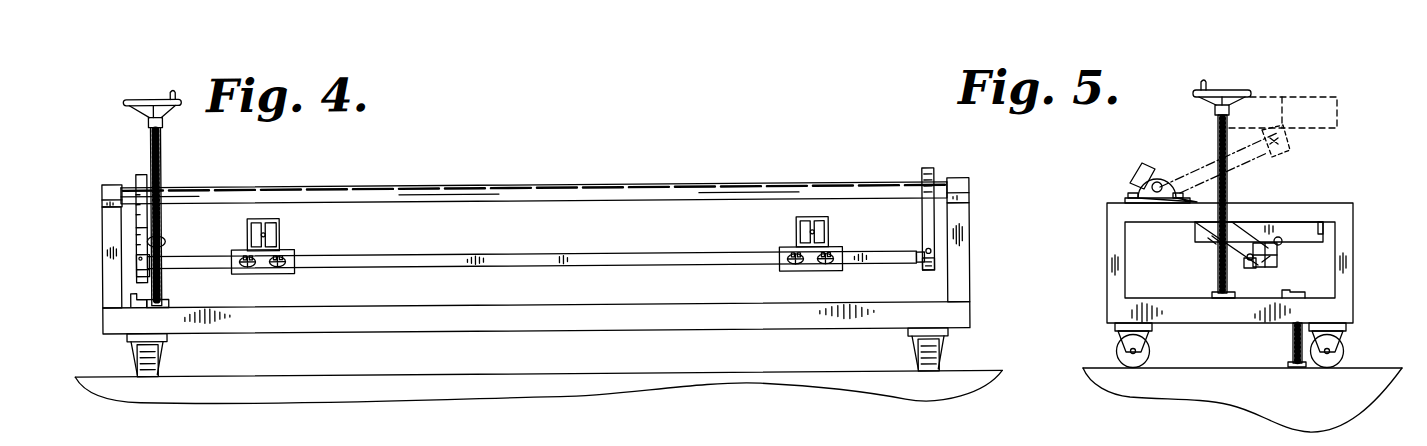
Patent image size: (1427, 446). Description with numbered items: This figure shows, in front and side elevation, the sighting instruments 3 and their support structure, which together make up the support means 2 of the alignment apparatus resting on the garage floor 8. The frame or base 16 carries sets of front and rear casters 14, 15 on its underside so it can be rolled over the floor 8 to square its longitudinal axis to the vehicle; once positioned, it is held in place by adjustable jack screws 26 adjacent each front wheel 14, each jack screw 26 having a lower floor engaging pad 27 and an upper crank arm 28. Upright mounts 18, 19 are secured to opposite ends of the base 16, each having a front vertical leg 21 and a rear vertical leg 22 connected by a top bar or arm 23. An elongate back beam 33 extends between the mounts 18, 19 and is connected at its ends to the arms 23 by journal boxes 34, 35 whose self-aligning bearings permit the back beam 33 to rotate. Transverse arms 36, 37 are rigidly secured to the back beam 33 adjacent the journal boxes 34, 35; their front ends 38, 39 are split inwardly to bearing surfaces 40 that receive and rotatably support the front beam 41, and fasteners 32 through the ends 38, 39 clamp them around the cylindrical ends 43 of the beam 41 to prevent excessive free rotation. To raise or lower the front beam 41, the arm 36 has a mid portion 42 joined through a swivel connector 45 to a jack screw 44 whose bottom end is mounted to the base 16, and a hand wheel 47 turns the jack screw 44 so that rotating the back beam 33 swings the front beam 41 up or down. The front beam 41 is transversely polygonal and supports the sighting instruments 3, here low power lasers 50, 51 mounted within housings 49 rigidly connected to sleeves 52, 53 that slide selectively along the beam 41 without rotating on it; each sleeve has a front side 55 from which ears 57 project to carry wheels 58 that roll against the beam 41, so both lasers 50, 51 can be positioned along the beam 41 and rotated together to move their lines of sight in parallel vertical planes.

In FIG. 4, the support means 2 is at (497, 188).
In FIG. 5, the support means 2 is at (1350, 287).
In FIG. 4, the sighting instruments 3 is at (281, 223).
In FIG. 5, the sighting instruments 3 is at (1323, 103).
In FIG. 4, the garage floor 8 is at (568, 376).
In FIG. 5, the garage floor 8 is at (1197, 367).
In FIG. 4, the front casters 14 is at (165, 368).
In FIG. 5, the front casters 14 is at (1338, 356).
In FIG. 5, the rear casters 15 is at (1122, 356).
In FIG. 4, the frame or base 16 is at (512, 306).
In FIG. 5, the frame or base 16 is at (1340, 310).
In FIG. 4, the upright mount 18 is at (108, 245).
In FIG. 4, the upright mount 19 is at (967, 248).
In FIG. 4, the front vertical leg 21 is at (110, 260).
In FIG. 5, the front vertical leg 21 is at (1347, 252).
In FIG. 5, the rear vertical leg 22 is at (1115, 243).
In FIG. 5, the top bar or arm 23 is at (1330, 207).
In FIG. 4, the jack screw 26 is at (131, 350).
In FIG. 5, the jack screw 26 is at (1293, 338).
In FIG. 5, the floor engaging pad 27 is at (1284, 362).
In FIG. 4, the crank arm 28 is at (128, 297).
In FIG. 5, the crank arm 28 is at (1296, 288).
In FIG. 4, the fasteners 32 is at (929, 252).
In FIG. 5, the fasteners 32 is at (1281, 243).
In FIG. 4, the back beam 33 is at (590, 188).
In FIG. 5, the back beam 33 is at (1158, 182).
In FIG. 4, the journal box 34 is at (113, 185).
In FIG. 5, the journal box 34 is at (1132, 197).
In FIG. 4, the journal box 35 is at (965, 179).
In FIG. 4, the transverse arm 36 is at (142, 228).
In FIG. 5, the transverse arm 36 is at (1217, 229).
In FIG. 4, the transverse arm 37 is at (927, 210).
In FIG. 4, the front end 38 is at (137, 275).
In FIG. 5, the front end 38 is at (1244, 263).
In FIG. 4, the front end 39 is at (931, 268).
In FIG. 5, the bearing surfaces 40 is at (1262, 243).
In FIG. 4, the front beam 41 is at (563, 256).
In FIG. 5, the front beam 41 is at (1246, 258).
In FIG. 4, the mid portion 42 is at (118, 248).
In FIG. 4, the ends of the beam 43 is at (918, 263).
In FIG. 4, the jack screw 44 is at (163, 168).
In FIG. 5, the jack screw 44 is at (1228, 197).
In FIG. 4, the swivel connector 45 is at (167, 243).
In FIG. 4, the hand wheel 47 is at (136, 116).
In FIG. 5, the hand wheel 47 is at (1232, 90).
In FIG. 4, the housings 49 is at (258, 220).
In FIG. 5, the housings 49 is at (1283, 94).
In FIG. 4, the laser 50 is at (282, 238).
In FIG. 5, the laser 50 is at (1327, 223).
In FIG. 4, the laser 51 is at (800, 228).
In FIG. 4, the sleeve 52 is at (294, 272).
In FIG. 4, the sleeve 53 is at (838, 246).
In FIG. 4, the front side 55 is at (810, 262).
In FIG. 4, the ears 57 is at (788, 268).
In FIG. 4, the wheels 58 is at (781, 252).